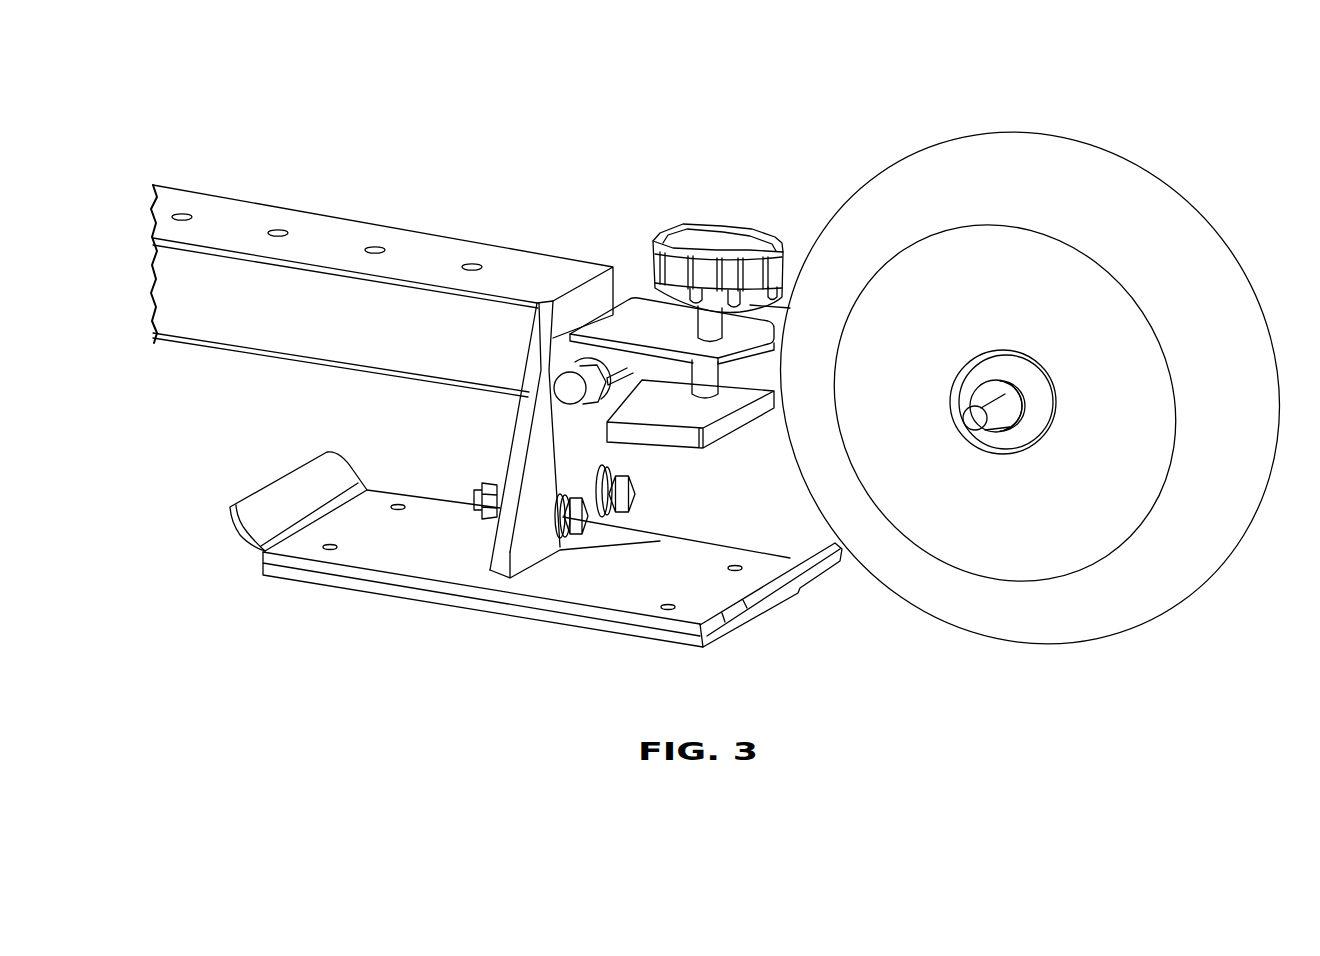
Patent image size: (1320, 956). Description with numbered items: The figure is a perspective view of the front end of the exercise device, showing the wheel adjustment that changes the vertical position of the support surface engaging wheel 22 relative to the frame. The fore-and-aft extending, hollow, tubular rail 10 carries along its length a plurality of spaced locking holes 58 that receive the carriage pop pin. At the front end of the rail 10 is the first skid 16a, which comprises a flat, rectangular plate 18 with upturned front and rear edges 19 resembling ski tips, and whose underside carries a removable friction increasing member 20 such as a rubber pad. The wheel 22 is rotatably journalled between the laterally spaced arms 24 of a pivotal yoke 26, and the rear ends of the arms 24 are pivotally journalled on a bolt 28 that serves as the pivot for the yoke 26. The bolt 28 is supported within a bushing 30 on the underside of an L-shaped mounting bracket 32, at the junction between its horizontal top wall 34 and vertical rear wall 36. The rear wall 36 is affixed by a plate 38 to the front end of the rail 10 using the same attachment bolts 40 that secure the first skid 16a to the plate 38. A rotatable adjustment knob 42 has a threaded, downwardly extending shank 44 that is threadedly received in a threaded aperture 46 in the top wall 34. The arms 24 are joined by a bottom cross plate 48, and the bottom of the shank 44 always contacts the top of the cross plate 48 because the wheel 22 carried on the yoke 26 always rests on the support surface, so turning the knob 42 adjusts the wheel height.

The rail 10 is at (421, 245).
The locking holes 58 is at (182, 214).
The plate 38 is at (540, 338).
The rear wall 36 is at (547, 463).
The bolt 28 is at (568, 392).
The bushing 30 is at (613, 382).
The attachment bolts 40 is at (592, 527).
The mounting bracket 32 is at (641, 291).
The top wall 34 is at (672, 328).
The shank 44 is at (716, 398).
The threaded aperture 46 is at (712, 344).
The cross plate 48 is at (720, 430).
The adjustment knob 42 is at (710, 235).
The yoke 26 is at (793, 280).
The arms 24 is at (768, 355).
The support surface engaging wheel 22 is at (991, 150).
The flat plate 18 is at (526, 557).
The friction increasing member 20 is at (438, 603).
The upturned front and rear edges 19 is at (235, 525).
The first skid 16a is at (326, 591).